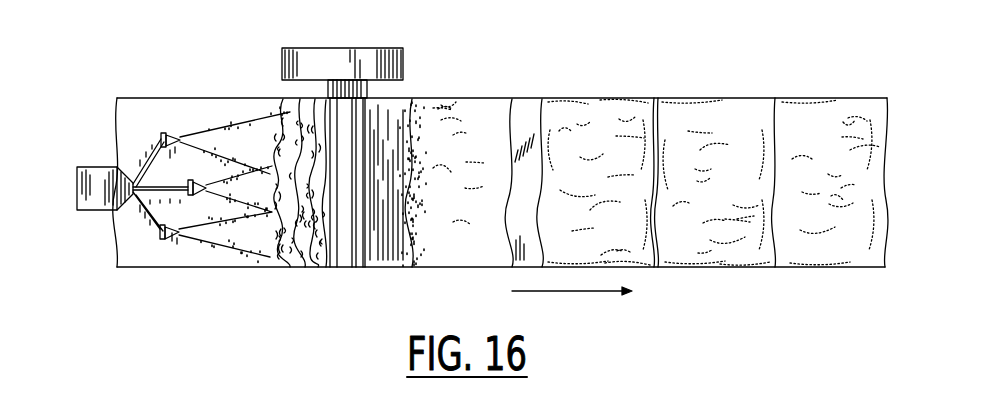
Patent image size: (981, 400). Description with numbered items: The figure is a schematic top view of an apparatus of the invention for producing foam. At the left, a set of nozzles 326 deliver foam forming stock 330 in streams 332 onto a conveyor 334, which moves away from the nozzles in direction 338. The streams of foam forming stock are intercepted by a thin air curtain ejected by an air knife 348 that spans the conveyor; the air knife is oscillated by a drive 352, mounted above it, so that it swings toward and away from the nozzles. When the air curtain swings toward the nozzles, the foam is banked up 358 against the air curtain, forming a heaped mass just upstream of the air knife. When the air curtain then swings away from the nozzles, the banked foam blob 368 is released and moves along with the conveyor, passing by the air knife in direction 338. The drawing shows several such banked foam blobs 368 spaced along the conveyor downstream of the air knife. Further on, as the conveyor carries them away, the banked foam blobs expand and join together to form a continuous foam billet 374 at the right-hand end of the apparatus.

The nozzles 326 is at (150, 137).
The foam forming stock 330 is at (195, 140).
The streams 332 is at (250, 137).
The conveyor 334 is at (388, 203).
The direction of conveyor movement 338 is at (556, 292).
The air knife 348 is at (345, 208).
The drive 352 is at (382, 57).
The banked up foam 358 is at (313, 137).
The banked foam blob 368 is at (487, 130).
The foam billet 374 is at (815, 137).